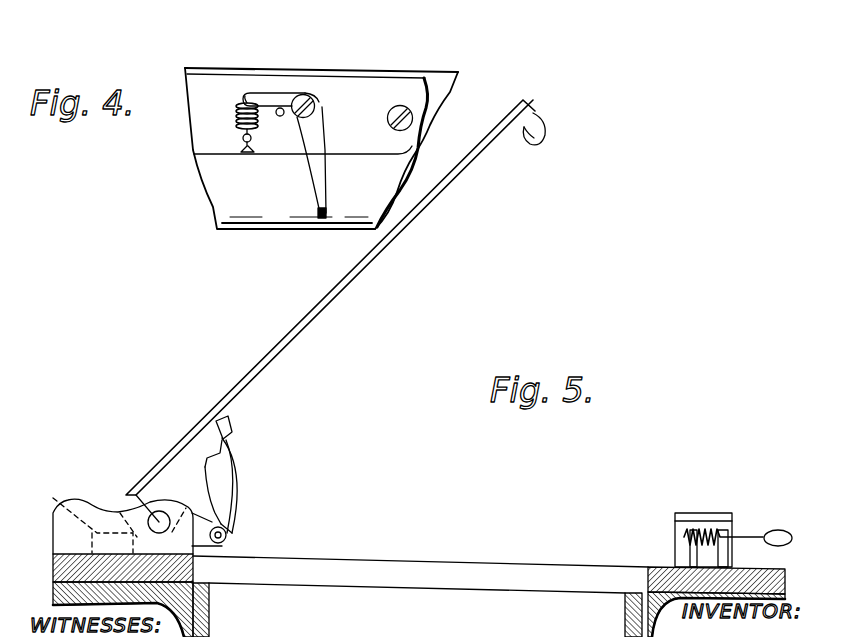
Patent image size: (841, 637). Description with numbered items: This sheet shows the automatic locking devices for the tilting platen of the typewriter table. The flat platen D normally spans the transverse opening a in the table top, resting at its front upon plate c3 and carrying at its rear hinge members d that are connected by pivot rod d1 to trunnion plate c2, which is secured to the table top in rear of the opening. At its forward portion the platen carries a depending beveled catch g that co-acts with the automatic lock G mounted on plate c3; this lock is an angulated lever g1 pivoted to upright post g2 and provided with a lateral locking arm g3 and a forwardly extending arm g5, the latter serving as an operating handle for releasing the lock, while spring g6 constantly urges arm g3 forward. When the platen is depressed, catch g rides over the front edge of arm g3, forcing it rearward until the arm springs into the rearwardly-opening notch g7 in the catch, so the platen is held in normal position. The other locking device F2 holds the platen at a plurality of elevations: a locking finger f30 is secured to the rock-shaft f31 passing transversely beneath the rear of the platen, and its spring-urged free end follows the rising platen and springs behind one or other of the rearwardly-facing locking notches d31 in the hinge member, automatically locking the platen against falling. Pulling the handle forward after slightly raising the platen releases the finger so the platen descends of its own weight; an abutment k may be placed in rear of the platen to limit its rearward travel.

In FIG. 4, the automatic lock G is at (321, 148).
In FIG. 5, the automatic lock G is at (684, 537).
In FIG. 4, the lateral locking arm g3 is at (268, 97).
In FIG. 4, the upright post g2 is at (312, 100).
In FIG. 4, the angulated lever g1 is at (327, 104).
In FIG. 4, the forwardly extending arm g5 is at (283, 137).
In FIG. 4, the spring g6 is at (237, 132).
In FIG. 5, the depending beveled catch g is at (538, 122).
In FIG. 5, the rearwardly-opening notch g7 is at (528, 141).
In FIG. 5, the flat platen D is at (338, 297).
In FIG. 5, the hinge member d is at (229, 424).
In FIG. 5, the pivot rod d1 is at (131, 506).
In FIG. 5, the rearwardly-facing locking notch d31 is at (231, 437).
In FIG. 5, the locking device F2 is at (242, 485).
In FIG. 5, the locking finger f30 is at (231, 514).
In FIG. 5, the rock-shaft f31 is at (228, 541).
In FIG. 5, the trunnion plate c2 is at (53, 566).
In FIG. 5, the plate c3 is at (785, 581).
In FIG. 5, the hidden recess k is at (113, 510).
In FIG. 5, the transverse opening a is at (420, 596).